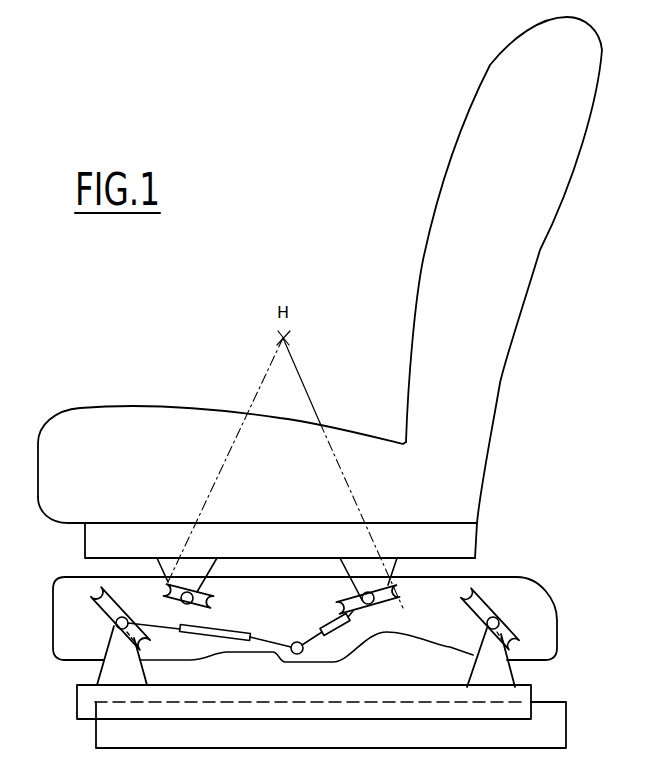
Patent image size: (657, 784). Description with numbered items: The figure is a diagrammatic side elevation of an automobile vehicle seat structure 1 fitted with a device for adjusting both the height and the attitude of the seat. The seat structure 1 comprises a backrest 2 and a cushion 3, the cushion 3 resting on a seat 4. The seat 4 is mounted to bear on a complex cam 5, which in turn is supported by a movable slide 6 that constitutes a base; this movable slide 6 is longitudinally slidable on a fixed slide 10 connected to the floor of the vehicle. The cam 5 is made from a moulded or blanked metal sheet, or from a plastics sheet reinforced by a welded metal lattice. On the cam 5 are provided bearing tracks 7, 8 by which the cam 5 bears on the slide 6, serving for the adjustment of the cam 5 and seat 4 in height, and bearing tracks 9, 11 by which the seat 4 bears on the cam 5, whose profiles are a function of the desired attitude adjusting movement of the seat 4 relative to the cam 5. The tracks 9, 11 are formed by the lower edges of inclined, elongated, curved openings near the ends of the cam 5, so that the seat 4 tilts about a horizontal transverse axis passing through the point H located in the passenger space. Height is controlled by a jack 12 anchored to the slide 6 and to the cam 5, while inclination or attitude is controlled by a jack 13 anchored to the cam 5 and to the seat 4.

The seat structure 1 is at (424, 199).
The backrest 2 is at (514, 298).
The cushion 3 is at (136, 420).
The seat 4 is at (470, 538).
The complex cam 5 is at (53, 623).
The movable slide 6 is at (75, 703).
The bearing track 7 is at (103, 610).
The bearing track 8 is at (520, 642).
The bearing track 9 is at (203, 608).
The fixed slide 10 is at (557, 728).
The bearing track 11 is at (397, 605).
The jack 12 is at (233, 640).
The jack 13 is at (335, 625).